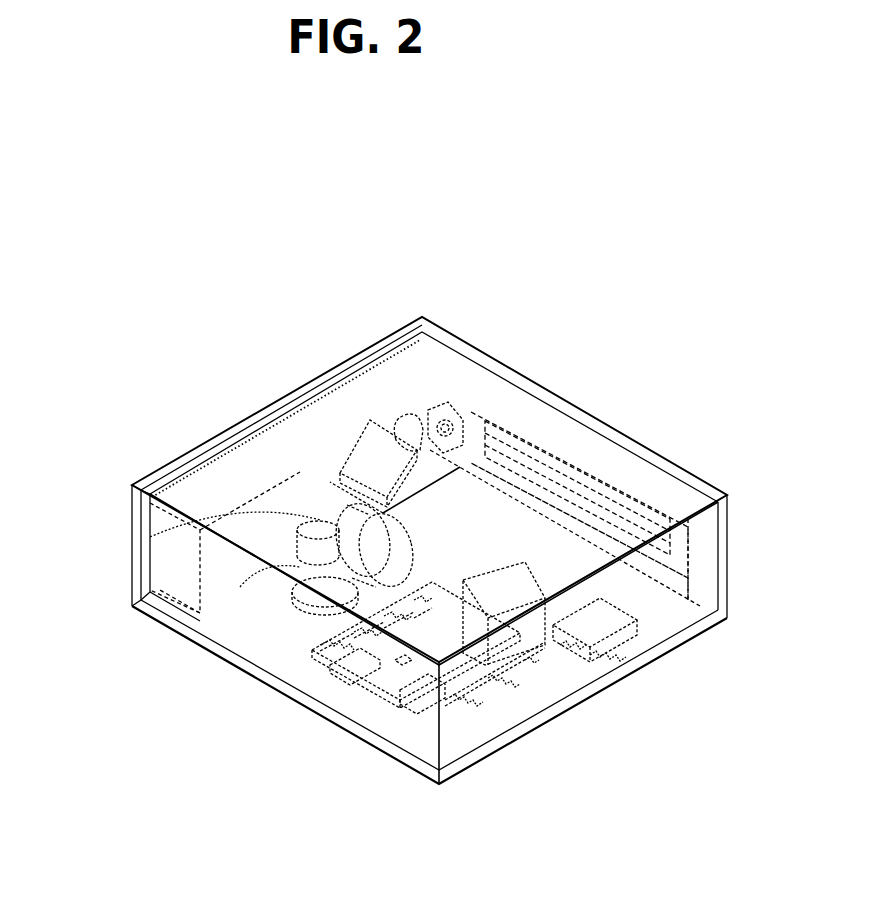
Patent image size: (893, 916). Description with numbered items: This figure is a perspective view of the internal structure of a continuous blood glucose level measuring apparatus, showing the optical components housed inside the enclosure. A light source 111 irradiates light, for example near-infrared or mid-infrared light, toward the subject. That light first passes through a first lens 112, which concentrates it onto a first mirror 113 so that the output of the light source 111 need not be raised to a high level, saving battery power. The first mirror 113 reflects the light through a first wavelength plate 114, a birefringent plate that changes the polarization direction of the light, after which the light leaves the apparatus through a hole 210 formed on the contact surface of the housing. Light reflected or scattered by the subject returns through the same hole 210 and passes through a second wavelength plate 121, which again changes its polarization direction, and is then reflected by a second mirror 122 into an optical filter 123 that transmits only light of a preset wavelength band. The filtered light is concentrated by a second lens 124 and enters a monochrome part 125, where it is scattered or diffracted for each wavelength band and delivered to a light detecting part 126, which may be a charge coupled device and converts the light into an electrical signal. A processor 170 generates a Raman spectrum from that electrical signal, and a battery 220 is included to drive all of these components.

The light source 111 is at (470, 392).
The first lens 112 is at (409, 432).
The first mirror 113 is at (357, 440).
The first wavelength plate 114 is at (350, 488).
The second wavelength plate 121 is at (295, 600).
The second mirror 122 is at (290, 514).
The optical filter 123 is at (322, 522).
The second lens 124 is at (462, 650).
The monochrome part 125 is at (517, 653).
The light detecting part 126 is at (590, 440).
The processor 170 is at (378, 700).
The hole 210 is at (290, 555).
The battery 220 is at (345, 408).